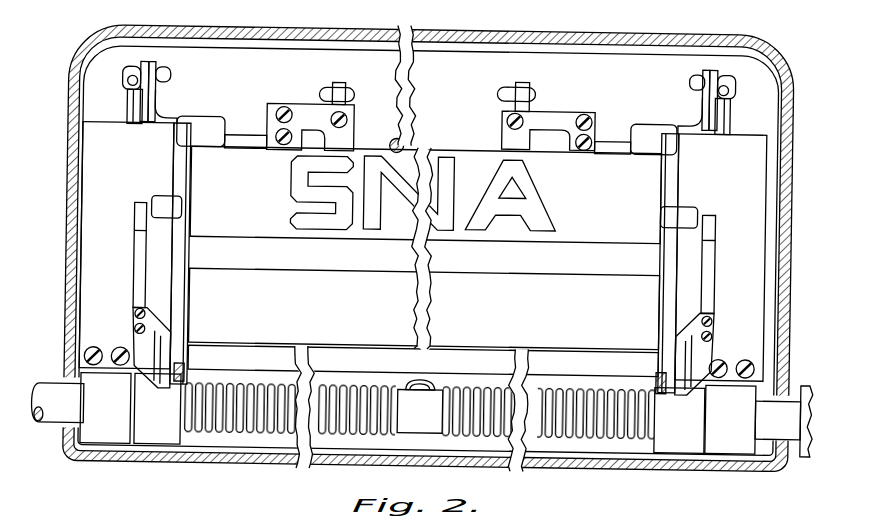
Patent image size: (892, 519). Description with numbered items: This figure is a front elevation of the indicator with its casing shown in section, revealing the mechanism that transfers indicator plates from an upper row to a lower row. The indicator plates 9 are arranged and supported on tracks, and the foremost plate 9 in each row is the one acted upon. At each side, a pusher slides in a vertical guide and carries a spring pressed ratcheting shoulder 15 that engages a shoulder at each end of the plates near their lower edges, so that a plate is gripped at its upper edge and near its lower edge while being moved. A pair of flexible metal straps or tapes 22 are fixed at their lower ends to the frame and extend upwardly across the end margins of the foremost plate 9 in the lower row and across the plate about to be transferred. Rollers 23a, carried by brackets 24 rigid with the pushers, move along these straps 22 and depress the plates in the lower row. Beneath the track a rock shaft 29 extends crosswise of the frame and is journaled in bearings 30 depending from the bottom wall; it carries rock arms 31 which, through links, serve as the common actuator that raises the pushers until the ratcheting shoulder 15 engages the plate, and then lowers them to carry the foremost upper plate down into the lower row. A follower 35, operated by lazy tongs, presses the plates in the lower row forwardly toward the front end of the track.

The indicator plate 9 is at (425, 194).
The spring pressed ratcheting shoulder 15 is at (423, 252).
The flexible metal strap 22 is at (180, 297).
The roller 23a is at (185, 367).
The bracket 24 is at (154, 389).
The rock shaft 29 is at (50, 394).
The bearing 30 is at (152, 439).
The rock arm 31 is at (124, 389).
The follower 35 is at (424, 308).